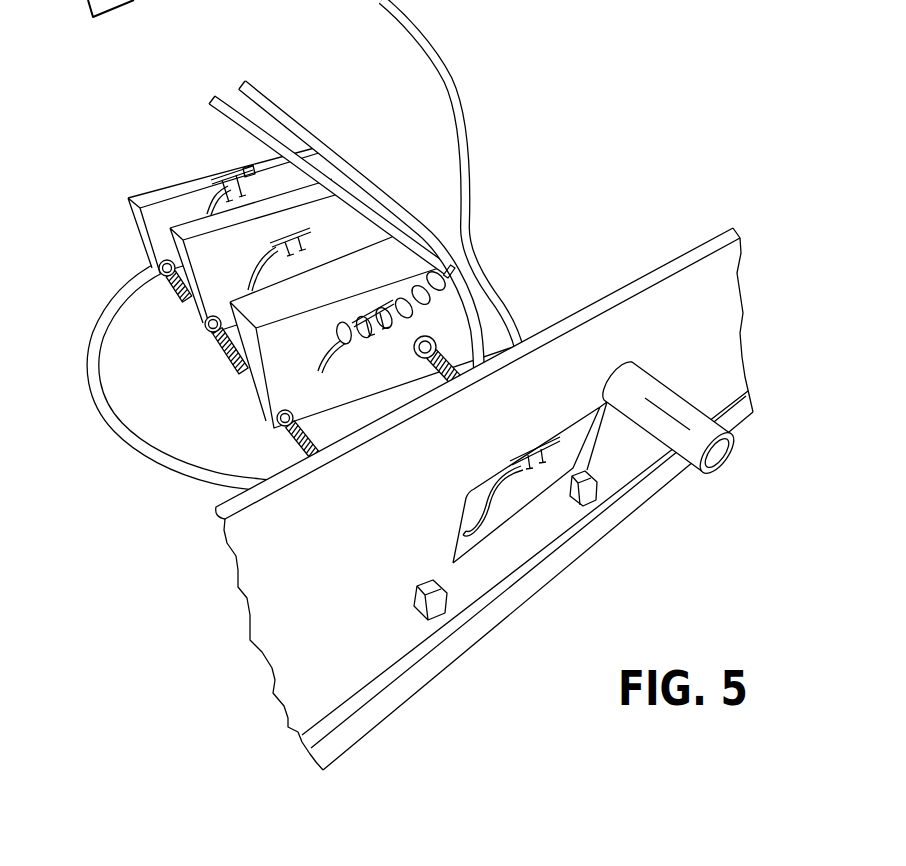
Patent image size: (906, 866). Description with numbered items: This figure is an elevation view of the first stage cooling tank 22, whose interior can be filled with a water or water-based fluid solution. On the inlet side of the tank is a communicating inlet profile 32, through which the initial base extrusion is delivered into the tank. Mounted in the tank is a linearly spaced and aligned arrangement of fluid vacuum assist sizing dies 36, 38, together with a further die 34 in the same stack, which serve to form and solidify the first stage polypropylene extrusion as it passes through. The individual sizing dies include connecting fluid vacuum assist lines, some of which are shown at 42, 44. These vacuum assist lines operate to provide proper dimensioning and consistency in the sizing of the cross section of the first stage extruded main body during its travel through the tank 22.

The first stage cooling tank 22 is at (347, 598).
The inlet profile 32 is at (497, 488).
The first module 34 is at (304, 366).
The fluid vacuum assist sizing die 36 is at (234, 269).
The fluid vacuum assist sizing die 38 is at (160, 196).
The fluid vacuum assist line 42 is at (150, 445).
The fluid vacuum assist line 44 is at (317, 171).